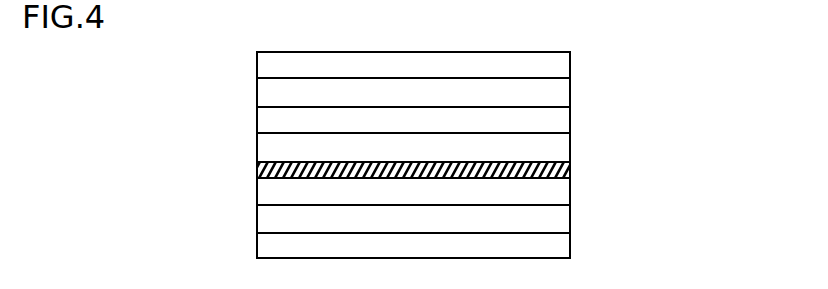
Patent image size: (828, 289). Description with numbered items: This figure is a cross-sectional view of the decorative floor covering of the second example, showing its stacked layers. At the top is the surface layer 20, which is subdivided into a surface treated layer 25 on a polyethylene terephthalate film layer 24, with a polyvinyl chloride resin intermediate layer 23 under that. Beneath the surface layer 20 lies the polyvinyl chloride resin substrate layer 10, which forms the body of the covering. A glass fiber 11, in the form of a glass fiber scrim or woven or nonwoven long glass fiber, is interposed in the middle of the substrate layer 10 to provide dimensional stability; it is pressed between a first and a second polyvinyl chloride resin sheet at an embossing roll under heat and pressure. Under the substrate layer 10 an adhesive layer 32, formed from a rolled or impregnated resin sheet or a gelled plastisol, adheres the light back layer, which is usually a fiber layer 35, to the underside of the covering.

The polyvinyl chloride resin substrate layer 10 is at (165, 135).
The glass fiber 11 is at (257, 171).
The surface layer 20 is at (668, 48).
The polyvinyl chloride resin intermediate layer 23 is at (570, 121).
The polyethylene terephthalate film layer 24 is at (570, 92).
The surface treated layer 25 is at (570, 62).
The adhesive layer 32 is at (570, 213).
The fiber layer 35 is at (570, 248).